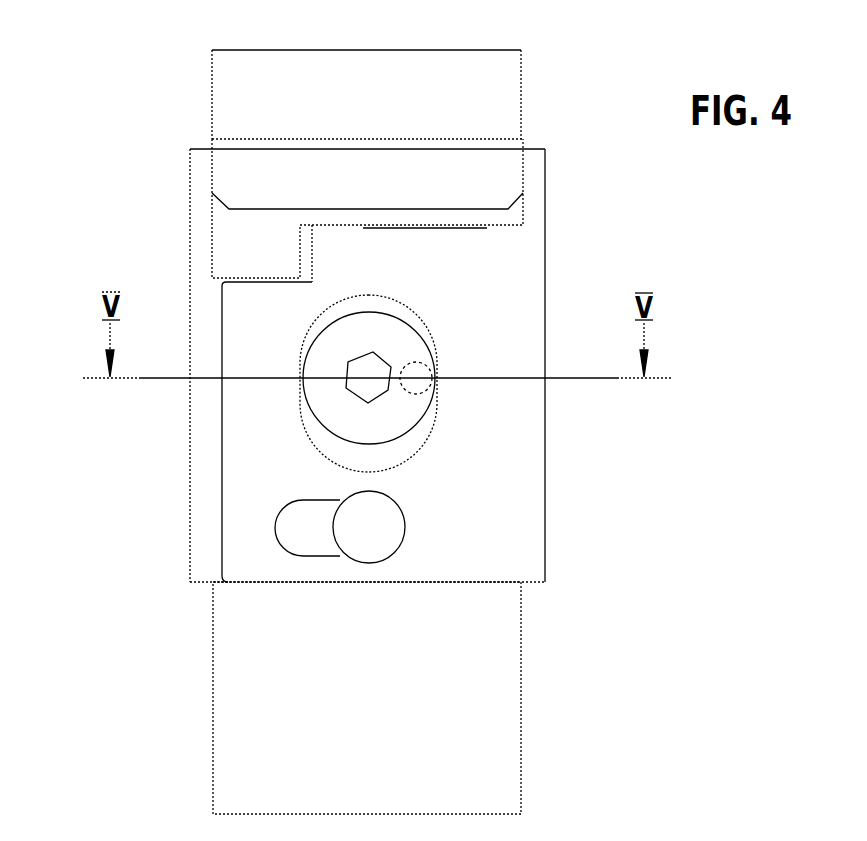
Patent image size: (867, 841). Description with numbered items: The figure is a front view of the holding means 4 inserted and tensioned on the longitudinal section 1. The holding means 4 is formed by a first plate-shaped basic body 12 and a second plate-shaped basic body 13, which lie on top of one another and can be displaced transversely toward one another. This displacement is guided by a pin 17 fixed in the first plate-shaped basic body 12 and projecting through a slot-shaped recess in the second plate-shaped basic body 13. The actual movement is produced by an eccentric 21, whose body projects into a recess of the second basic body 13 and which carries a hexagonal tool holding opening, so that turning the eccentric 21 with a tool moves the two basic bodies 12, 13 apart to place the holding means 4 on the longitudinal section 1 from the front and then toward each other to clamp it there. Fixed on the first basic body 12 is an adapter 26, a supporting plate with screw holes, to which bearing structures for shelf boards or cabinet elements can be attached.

The longitudinal section 1 is at (418, 67).
The holding means 4 is at (178, 194).
The first plate-shaped basic body 12 is at (205, 470).
The second plate-shaped basic body 13 is at (525, 517).
The pin 17 is at (352, 528).
The eccentric 21 is at (436, 428).
The adapter 26 is at (443, 167).